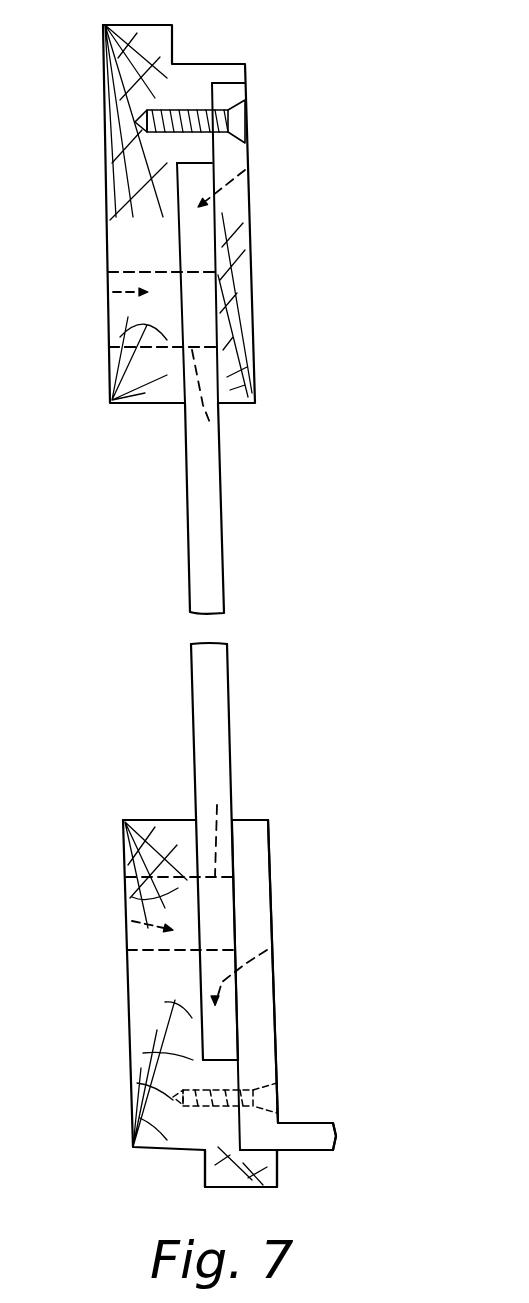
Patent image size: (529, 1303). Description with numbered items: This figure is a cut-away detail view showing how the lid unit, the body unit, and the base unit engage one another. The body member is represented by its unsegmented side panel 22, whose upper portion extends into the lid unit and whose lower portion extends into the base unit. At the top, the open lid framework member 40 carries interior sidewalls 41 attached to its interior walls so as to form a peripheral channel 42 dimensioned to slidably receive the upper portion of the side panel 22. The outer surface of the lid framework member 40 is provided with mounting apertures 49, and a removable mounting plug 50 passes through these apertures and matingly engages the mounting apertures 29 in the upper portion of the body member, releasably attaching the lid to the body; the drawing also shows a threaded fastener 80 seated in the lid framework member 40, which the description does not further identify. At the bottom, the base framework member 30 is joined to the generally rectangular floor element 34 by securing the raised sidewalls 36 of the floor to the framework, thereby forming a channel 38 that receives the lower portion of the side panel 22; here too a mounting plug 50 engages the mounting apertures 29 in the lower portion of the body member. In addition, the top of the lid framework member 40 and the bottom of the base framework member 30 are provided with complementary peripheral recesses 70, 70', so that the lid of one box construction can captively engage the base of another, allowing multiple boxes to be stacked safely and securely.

The unsegmented side panel 22 is at (207, 570).
The mounting apertures 29 is at (210, 423).
The base framework member 30 is at (124, 1100).
The floor element 34 is at (307, 1122).
The sidewalls 36 is at (263, 1018).
The channel 38 is at (267, 950).
The lid framework member 40 is at (102, 72).
The interior sidewalls 41 is at (240, 203).
The peripheral channel 42 is at (245, 170).
The mounting apertures 49 is at (108, 318).
The removable mounting plugs 50 is at (107, 290).
The peripheral recess 70 is at (224, 26).
The peripheral recess 70' is at (196, 1184).
The screw 80 is at (240, 122).